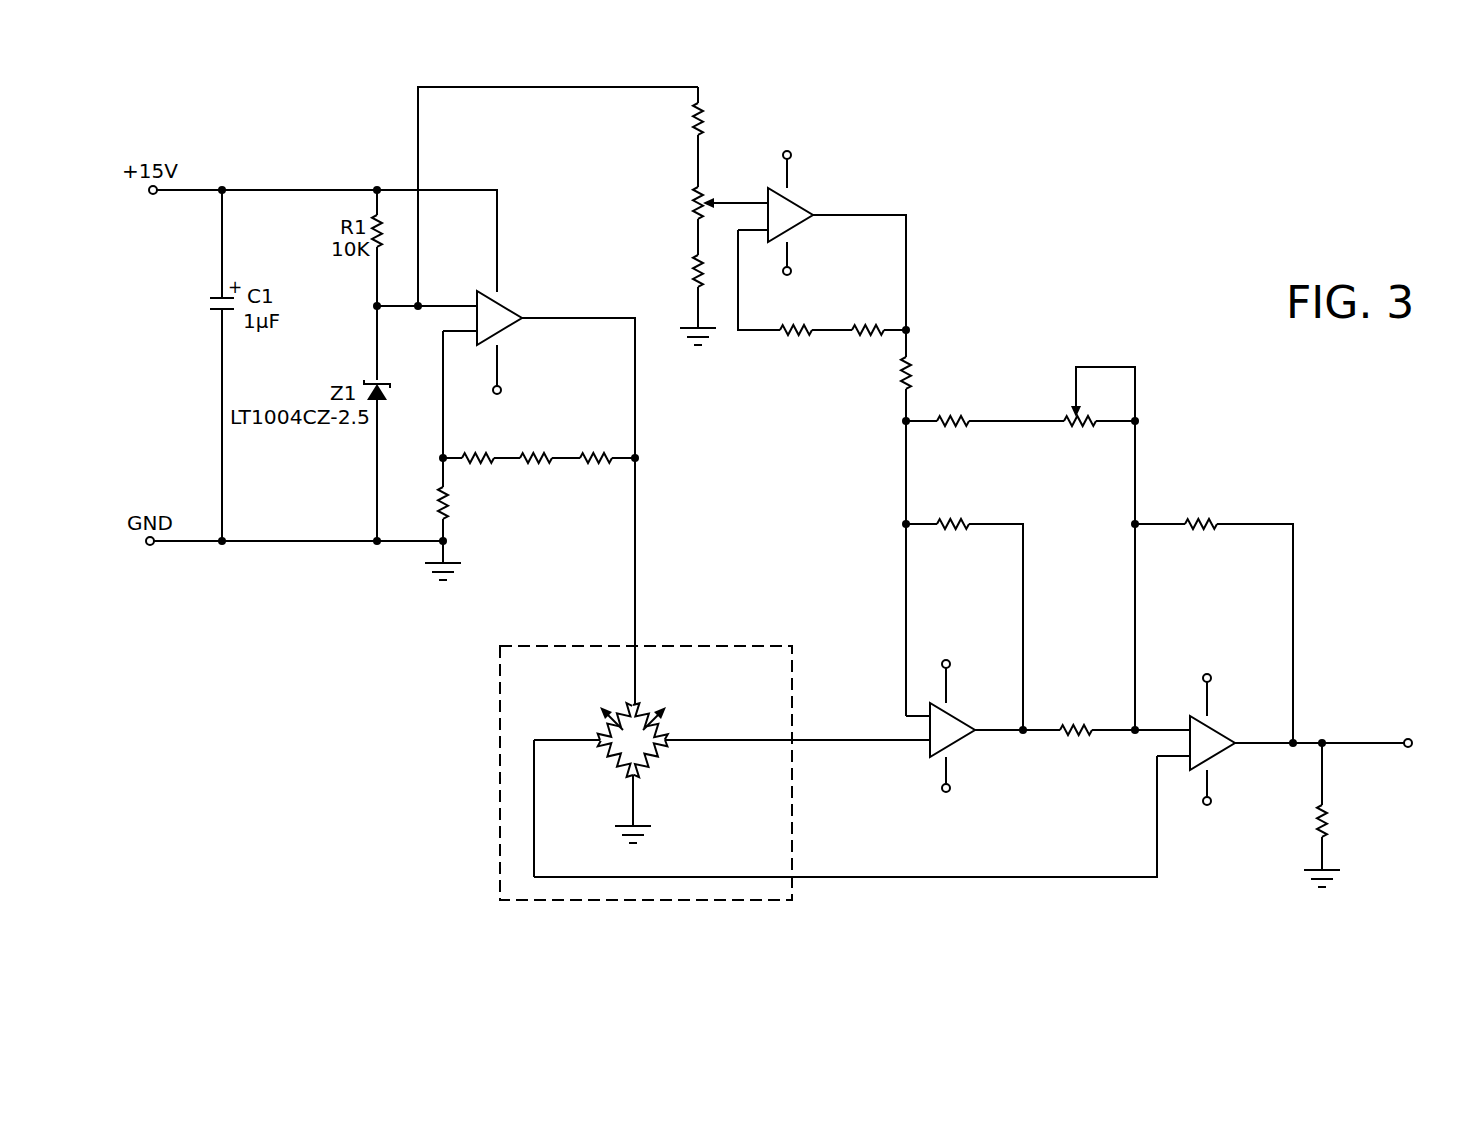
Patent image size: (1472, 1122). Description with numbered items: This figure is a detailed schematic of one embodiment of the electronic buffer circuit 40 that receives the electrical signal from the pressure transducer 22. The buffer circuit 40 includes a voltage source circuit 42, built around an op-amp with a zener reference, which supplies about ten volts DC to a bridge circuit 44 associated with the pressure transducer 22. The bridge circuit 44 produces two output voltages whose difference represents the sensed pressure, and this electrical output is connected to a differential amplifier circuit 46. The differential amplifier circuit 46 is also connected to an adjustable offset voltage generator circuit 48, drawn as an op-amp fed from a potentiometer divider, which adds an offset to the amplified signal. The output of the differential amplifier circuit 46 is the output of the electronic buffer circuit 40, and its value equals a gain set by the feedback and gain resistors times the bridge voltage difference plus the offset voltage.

The pressure transducer 22 is at (607, 773).
The electronic buffer circuit 40 is at (1091, 274).
The voltage source circuit 42 is at (528, 289).
The bridge circuit 44 is at (608, 767).
The differential amplifier circuit 46 is at (1156, 512).
The adjustable offset voltage generator circuit 48 is at (836, 163).